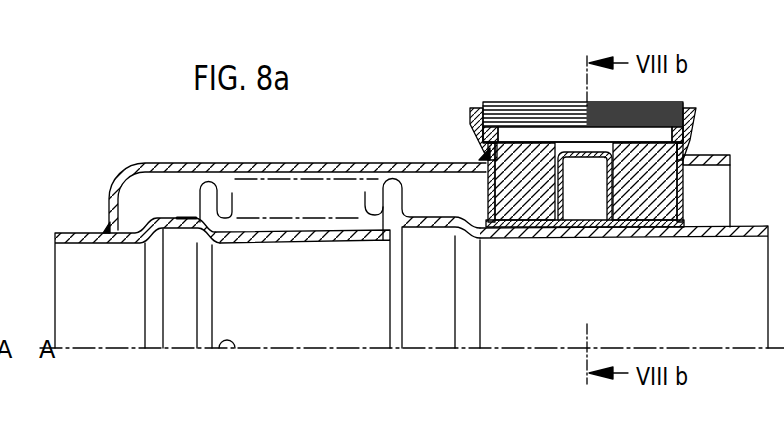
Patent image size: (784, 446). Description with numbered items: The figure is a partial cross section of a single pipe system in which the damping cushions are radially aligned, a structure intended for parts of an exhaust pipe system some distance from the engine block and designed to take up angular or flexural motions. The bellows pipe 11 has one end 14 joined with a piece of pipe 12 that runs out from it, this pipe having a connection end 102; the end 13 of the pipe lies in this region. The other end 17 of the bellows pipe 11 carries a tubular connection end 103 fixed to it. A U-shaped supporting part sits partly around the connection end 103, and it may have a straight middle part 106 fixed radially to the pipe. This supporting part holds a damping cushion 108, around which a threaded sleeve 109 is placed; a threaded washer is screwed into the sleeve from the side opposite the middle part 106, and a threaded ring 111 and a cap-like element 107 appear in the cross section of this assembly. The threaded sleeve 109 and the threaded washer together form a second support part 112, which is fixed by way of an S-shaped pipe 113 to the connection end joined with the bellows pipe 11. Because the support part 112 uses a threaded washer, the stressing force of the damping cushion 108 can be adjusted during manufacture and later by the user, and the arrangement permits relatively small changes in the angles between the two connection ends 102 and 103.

The bellows pipe 11 is at (208, 174).
The piece of pipe 12 is at (304, 242).
The pipe end 13 is at (173, 230).
The end of the bellows pipe 14 is at (183, 217).
The end of the bellows pipe 17 is at (418, 216).
The connection end 102 is at (83, 234).
The tubular connection end 103 is at (738, 225).
The middle part of the U-shaped part 106 is at (652, 226).
The support cup 107 is at (598, 150).
The damping cushion 108 is at (689, 153).
The threaded sleeve 109 is at (698, 111).
The threaded ring 111 is at (667, 103).
The second support part 112 is at (517, 101).
The S-shaped pipe 113 is at (336, 163).